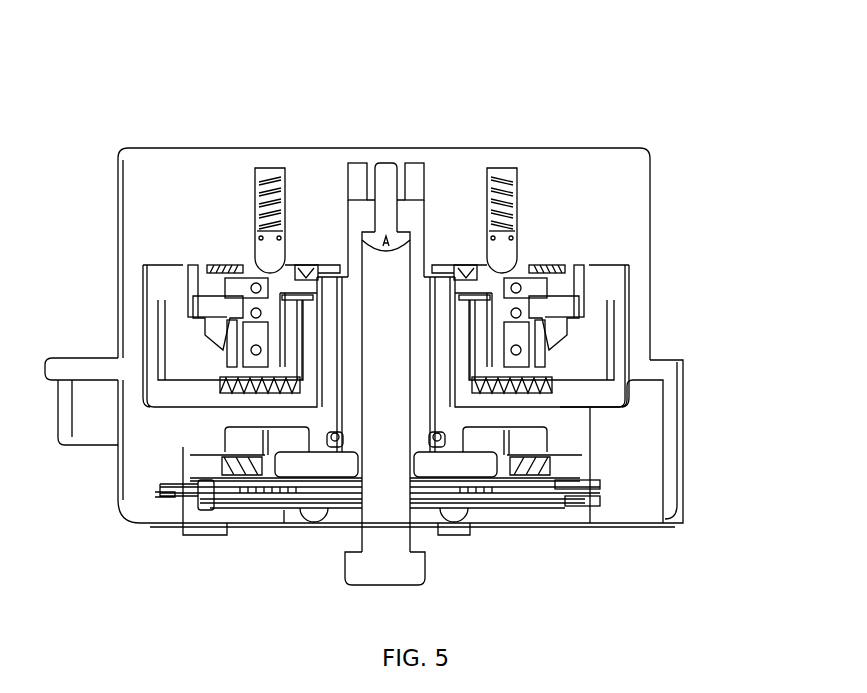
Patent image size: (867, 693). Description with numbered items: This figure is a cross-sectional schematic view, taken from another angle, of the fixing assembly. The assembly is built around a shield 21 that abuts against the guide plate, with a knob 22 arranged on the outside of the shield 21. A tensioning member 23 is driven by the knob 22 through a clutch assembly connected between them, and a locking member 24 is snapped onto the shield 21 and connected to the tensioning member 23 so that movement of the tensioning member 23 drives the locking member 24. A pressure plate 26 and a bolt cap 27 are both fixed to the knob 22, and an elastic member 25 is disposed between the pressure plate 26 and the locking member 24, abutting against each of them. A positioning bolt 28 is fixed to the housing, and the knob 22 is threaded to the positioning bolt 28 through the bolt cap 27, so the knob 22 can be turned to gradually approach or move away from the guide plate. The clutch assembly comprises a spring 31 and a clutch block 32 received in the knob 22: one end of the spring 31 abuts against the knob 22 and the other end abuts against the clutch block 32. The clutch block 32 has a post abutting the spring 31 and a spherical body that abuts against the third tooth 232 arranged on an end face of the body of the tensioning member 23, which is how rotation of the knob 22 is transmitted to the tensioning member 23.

The shield 21 is at (598, 398).
The knob 22 is at (213, 207).
The tensioning member 23 is at (530, 288).
The locking member 24 is at (583, 373).
The elastic member 25 is at (510, 335).
The pressure plate 26 is at (560, 305).
The bolt cap 27 is at (360, 220).
The positioning bolt 28 is at (392, 562).
The spring 31 is at (505, 255).
The clutch block 32 is at (533, 250).
The third tooth 232 is at (462, 267).